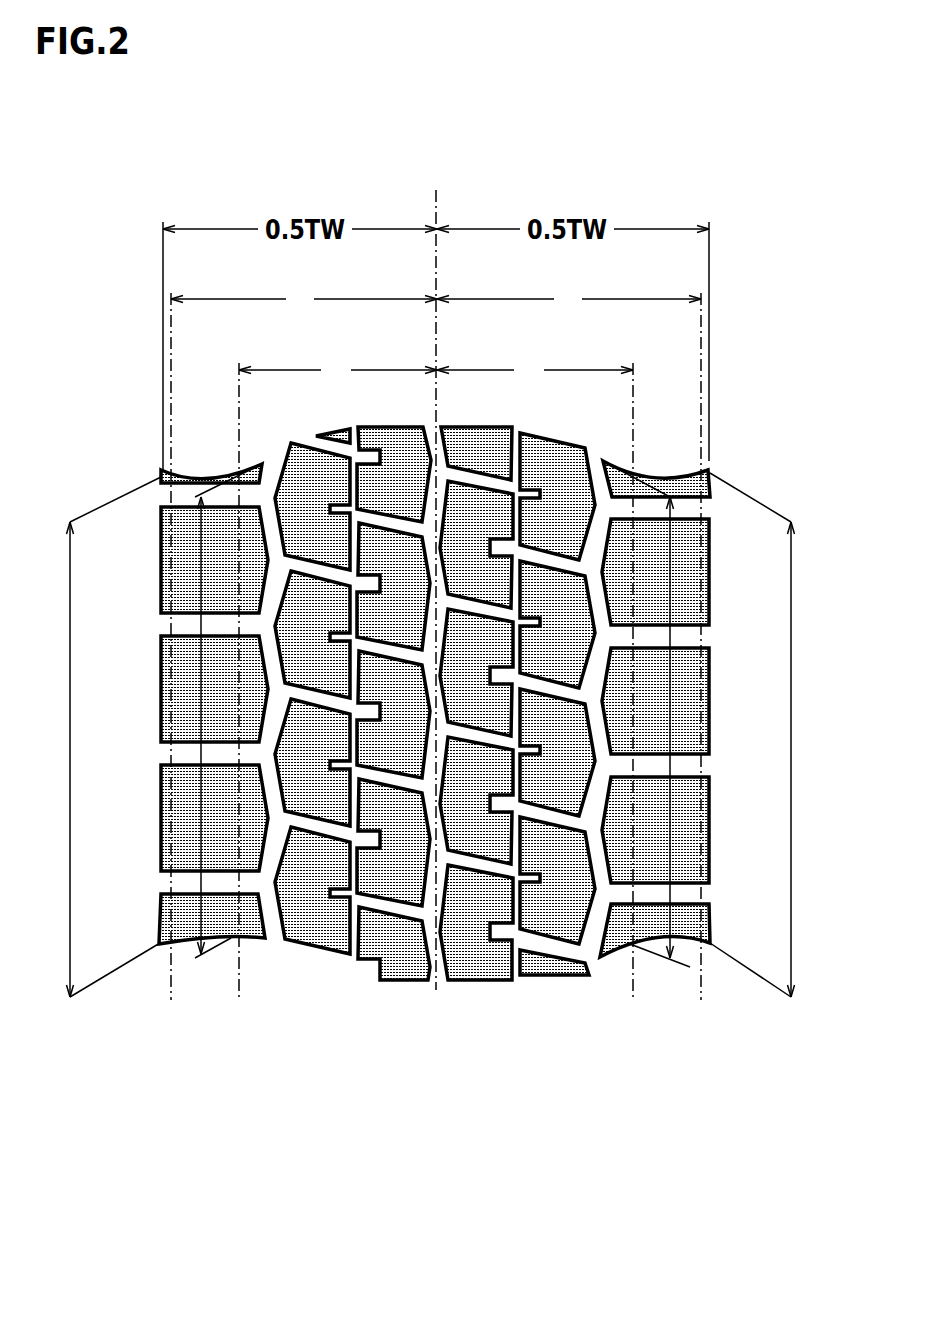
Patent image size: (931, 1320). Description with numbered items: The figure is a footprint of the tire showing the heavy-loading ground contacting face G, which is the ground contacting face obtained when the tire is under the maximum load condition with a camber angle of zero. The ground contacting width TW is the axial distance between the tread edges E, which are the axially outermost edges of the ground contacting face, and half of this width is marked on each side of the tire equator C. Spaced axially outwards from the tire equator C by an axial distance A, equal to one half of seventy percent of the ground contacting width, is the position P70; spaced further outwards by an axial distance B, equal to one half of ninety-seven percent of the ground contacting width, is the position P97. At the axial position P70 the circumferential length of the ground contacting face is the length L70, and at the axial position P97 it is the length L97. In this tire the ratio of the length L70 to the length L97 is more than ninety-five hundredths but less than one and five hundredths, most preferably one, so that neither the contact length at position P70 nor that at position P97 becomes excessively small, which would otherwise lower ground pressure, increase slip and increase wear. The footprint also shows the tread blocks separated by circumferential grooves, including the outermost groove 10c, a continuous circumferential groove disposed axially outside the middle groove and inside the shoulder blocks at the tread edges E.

The ground contacting face G is at (315, 1097).
The tread edge E is at (161, 550).
The outermost groove 10c is at (274, 856).
The tire equator C is at (437, 575).
The position P97 is at (169, 343).
The position P70 is at (238, 445).
The length L97 is at (431, 735).
The length L70 is at (200, 853).
The axial distance A is at (436, 385).
The axial distance B is at (436, 314).